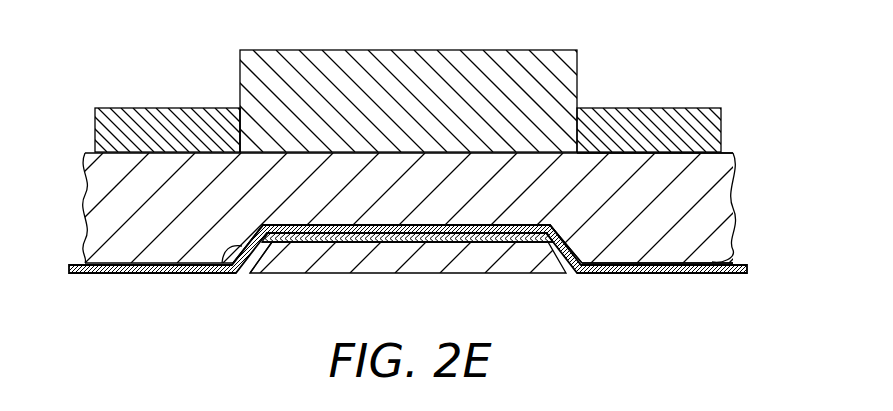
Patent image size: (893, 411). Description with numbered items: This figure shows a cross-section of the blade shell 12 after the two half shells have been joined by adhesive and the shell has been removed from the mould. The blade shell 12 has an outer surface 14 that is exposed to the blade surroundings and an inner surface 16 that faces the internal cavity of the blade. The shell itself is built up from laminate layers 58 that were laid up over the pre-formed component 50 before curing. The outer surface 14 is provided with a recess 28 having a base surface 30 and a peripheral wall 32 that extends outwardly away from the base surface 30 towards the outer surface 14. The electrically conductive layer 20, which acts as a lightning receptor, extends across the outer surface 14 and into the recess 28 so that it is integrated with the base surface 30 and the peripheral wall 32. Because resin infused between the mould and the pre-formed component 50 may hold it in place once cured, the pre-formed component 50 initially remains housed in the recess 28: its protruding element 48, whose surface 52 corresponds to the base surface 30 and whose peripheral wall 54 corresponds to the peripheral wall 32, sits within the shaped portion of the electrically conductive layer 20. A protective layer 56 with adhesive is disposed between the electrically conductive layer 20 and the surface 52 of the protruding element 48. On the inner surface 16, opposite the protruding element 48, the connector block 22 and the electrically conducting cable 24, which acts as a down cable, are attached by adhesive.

The blade shell 12 is at (88, 229).
The outer surface 14 is at (712, 263).
The inner surface 16 is at (262, 135).
The electrically conductive layer 20 is at (663, 277).
The connector block 22 is at (265, 58).
The electrically conducting cable 24 is at (118, 117).
The recess 28 is at (416, 212).
The base surface 30 is at (598, 150).
The peripheral wall 32 is at (240, 243).
The protruding element 48 is at (403, 243).
The pre-formed component 50 is at (428, 284).
The surface 52 is at (467, 250).
The peripheral wall 54 is at (271, 243).
The protective layer 56 is at (345, 243).
The laminate layers 58 is at (688, 168).